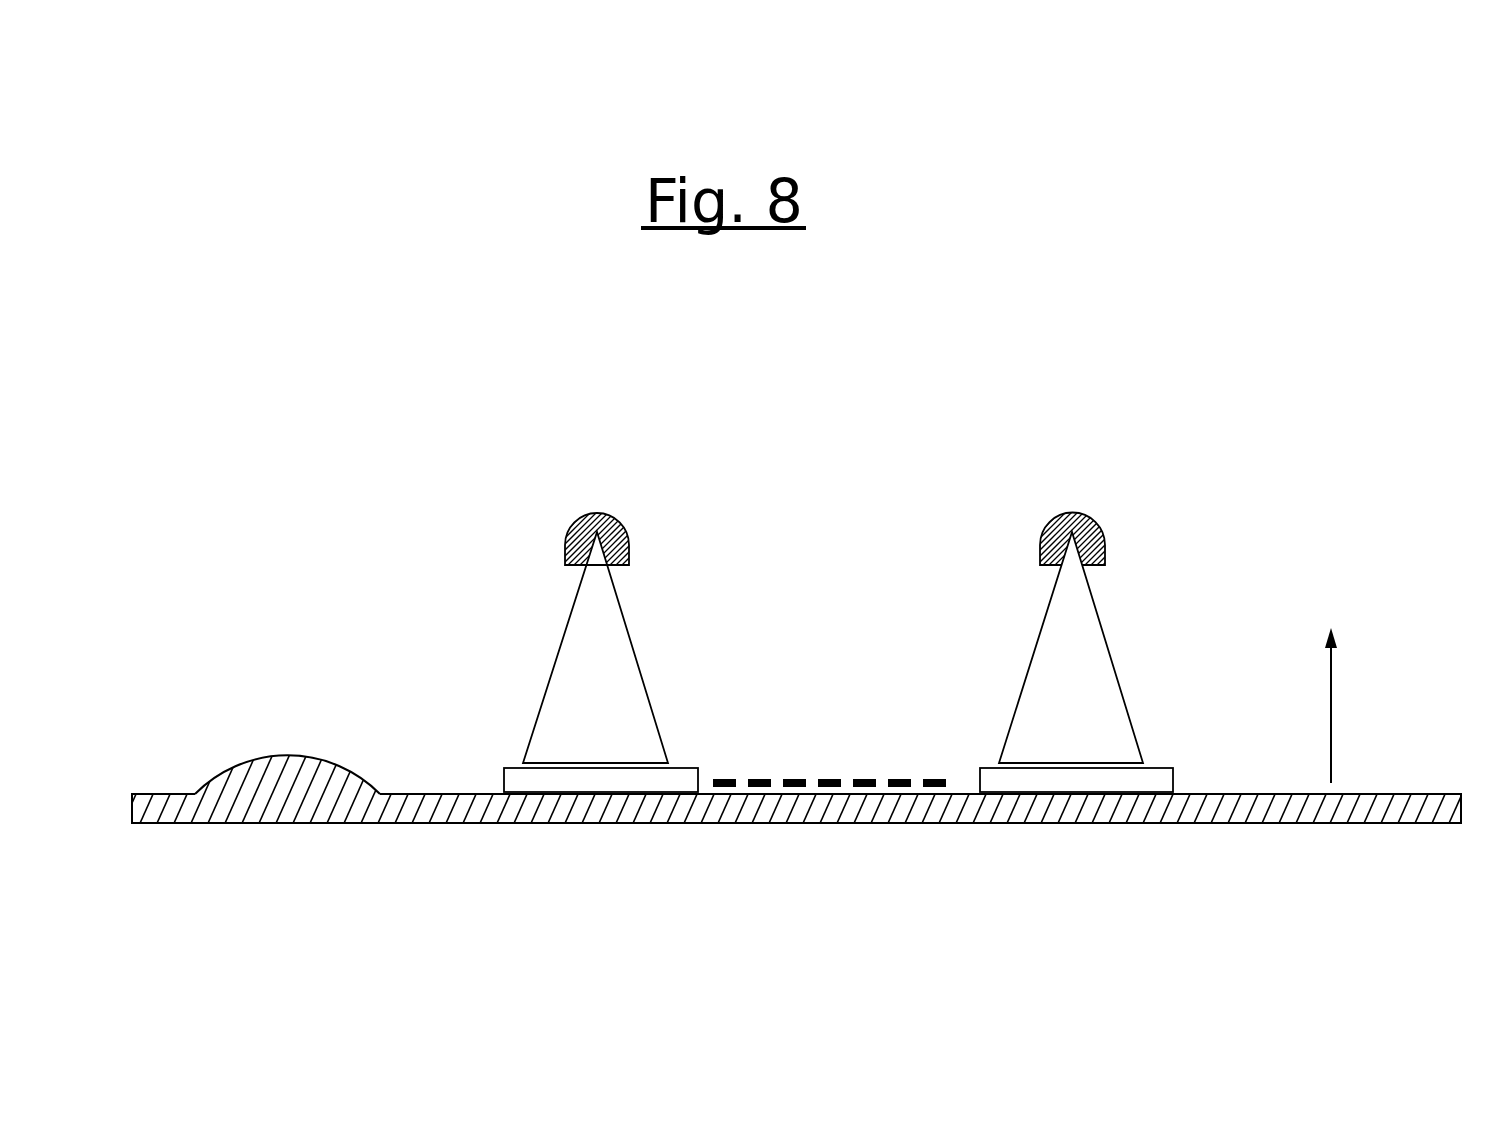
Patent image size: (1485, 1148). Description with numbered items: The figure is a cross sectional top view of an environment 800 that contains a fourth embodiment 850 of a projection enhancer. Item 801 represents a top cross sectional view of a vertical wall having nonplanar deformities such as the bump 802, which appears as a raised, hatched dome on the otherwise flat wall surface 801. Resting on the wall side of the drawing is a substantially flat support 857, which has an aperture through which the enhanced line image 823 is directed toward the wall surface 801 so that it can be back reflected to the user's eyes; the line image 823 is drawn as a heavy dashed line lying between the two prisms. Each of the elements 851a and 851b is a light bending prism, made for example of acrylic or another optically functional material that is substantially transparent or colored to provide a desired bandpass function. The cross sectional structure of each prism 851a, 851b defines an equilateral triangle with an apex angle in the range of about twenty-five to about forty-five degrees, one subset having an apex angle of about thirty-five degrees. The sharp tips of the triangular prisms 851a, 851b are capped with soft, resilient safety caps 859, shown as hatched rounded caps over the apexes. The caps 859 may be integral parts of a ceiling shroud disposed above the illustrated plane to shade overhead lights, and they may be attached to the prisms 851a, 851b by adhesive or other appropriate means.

The environment 800 is at (802, 578).
The wall surface 801 is at (470, 796).
The bump 802 is at (337, 760).
The enhanced line image 823 is at (835, 768).
The fourth embodiment of projection enhancer 850 is at (1026, 398).
The light bending prism 851a is at (552, 621).
The light bending prism 851b is at (1110, 621).
The substantially flat support 857 is at (1052, 782).
The safety caps 859 is at (1097, 524).